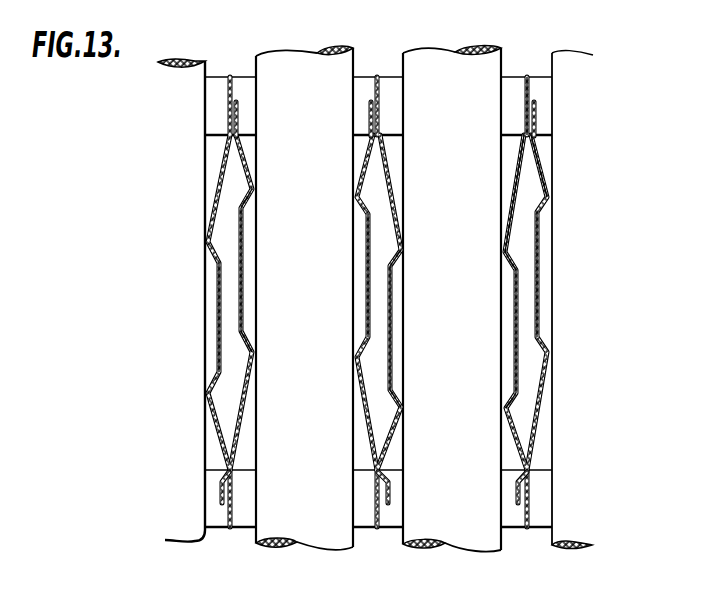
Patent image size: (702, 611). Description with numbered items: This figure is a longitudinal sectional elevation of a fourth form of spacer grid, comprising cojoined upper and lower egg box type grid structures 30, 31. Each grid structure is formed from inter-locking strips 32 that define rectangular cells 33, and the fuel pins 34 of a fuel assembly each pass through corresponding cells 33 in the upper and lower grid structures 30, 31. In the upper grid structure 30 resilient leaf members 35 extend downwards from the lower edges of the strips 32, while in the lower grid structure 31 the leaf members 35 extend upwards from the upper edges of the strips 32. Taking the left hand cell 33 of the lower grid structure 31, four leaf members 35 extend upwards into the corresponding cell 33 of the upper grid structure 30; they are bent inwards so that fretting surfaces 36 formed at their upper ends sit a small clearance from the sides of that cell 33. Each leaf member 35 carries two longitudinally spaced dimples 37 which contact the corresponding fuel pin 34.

The upper grid structure 30 is at (541, 90).
The lower grid structure 31 is at (540, 508).
The inter-locking strips 32 is at (545, 118).
The rectangular cells 33 is at (240, 87).
The fuel pins 34 is at (285, 77).
The resilient leaf members 35 is at (242, 281).
The fretting surfaces 36 is at (368, 115).
The dimples 37 is at (360, 193).